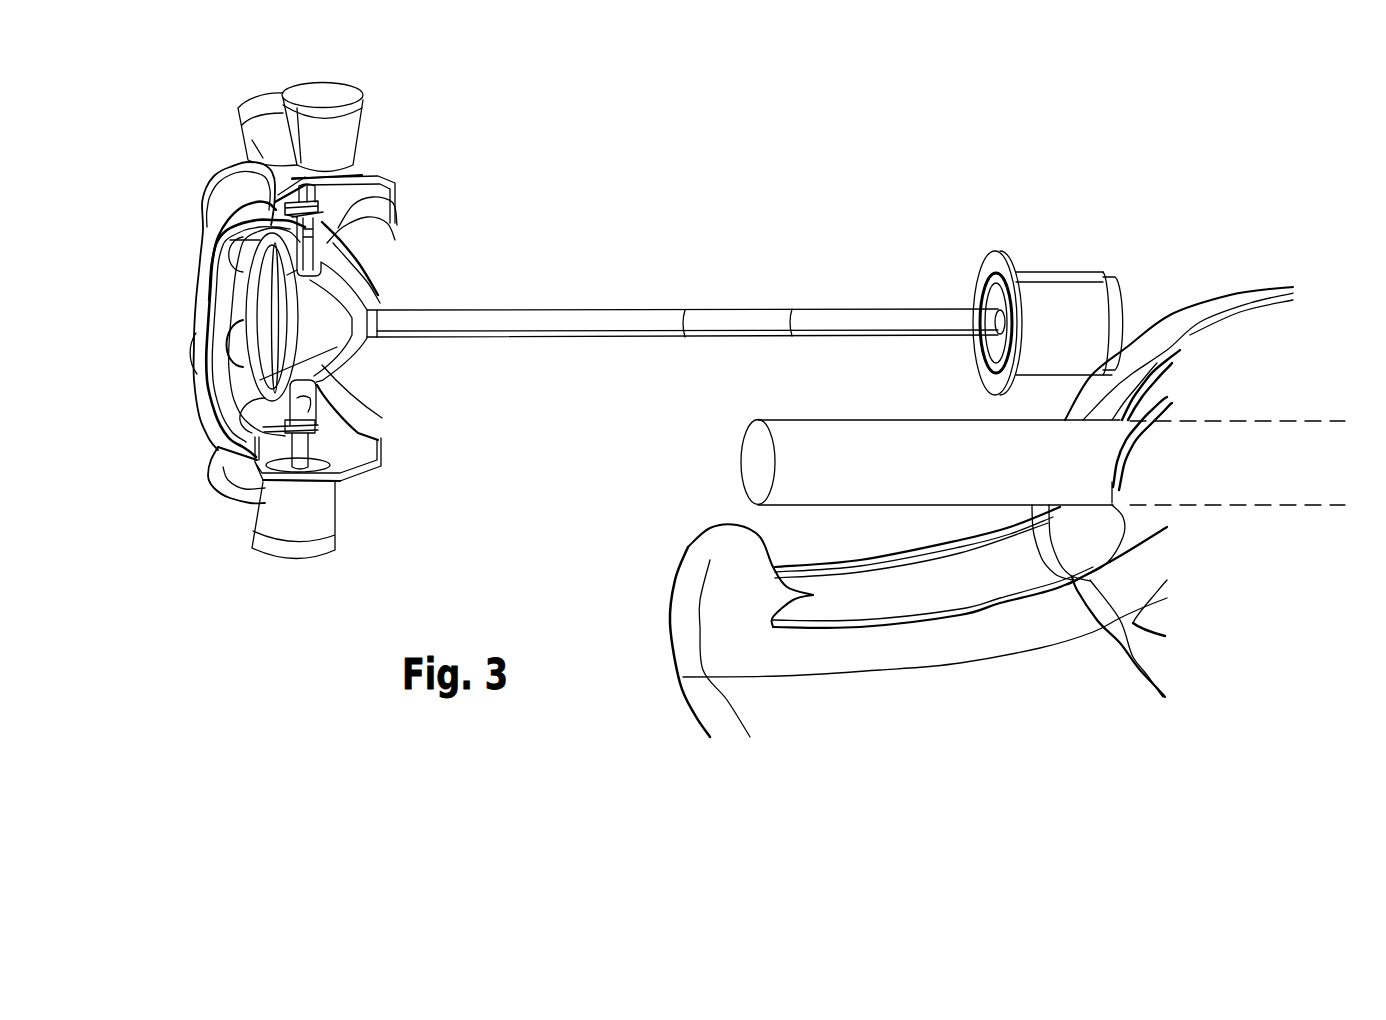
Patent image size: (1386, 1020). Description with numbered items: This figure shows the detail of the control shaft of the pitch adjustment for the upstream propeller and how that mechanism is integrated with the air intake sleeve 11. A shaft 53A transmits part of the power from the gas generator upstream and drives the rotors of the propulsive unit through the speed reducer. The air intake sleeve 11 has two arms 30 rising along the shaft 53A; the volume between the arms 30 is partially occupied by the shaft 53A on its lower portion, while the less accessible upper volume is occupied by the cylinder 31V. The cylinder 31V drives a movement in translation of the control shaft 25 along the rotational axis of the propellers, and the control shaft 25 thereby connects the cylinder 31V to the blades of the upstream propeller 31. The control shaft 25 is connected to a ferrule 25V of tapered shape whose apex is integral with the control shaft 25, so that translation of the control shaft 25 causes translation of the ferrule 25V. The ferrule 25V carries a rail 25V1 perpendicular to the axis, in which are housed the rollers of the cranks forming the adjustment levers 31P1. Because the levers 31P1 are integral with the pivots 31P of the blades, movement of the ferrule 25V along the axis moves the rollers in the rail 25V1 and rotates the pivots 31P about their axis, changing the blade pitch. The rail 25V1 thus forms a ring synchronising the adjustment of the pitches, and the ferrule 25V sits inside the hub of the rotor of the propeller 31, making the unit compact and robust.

The air intake sleeve 11 is at (942, 527).
The control shaft 25 is at (740, 318).
The ferrule 25V is at (347, 297).
The rail 25V1 is at (213, 267).
The arms 30 is at (1268, 295).
The upstream propeller 31 is at (343, 137).
The pivots 31P is at (320, 195).
The adjustment levers 31P1 is at (320, 217).
The cylinder 31V is at (1045, 278).
The shaft 53A is at (960, 447).